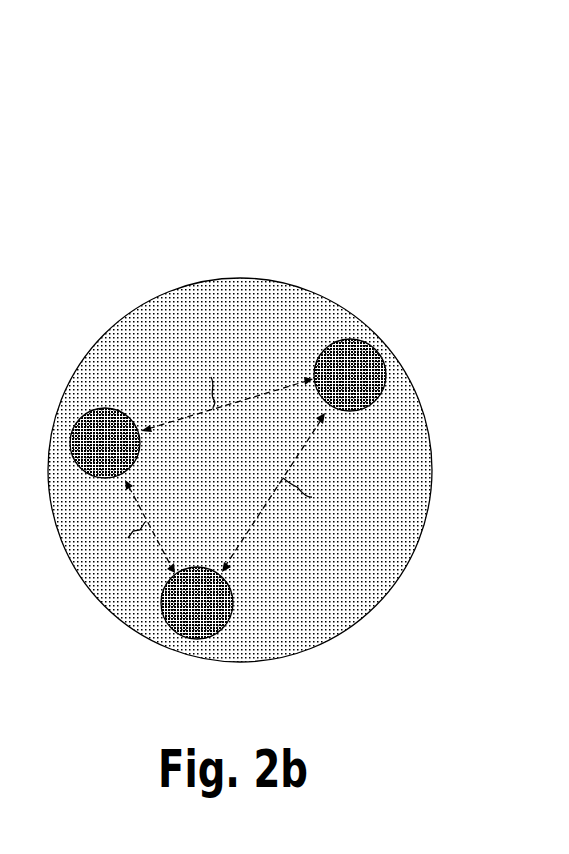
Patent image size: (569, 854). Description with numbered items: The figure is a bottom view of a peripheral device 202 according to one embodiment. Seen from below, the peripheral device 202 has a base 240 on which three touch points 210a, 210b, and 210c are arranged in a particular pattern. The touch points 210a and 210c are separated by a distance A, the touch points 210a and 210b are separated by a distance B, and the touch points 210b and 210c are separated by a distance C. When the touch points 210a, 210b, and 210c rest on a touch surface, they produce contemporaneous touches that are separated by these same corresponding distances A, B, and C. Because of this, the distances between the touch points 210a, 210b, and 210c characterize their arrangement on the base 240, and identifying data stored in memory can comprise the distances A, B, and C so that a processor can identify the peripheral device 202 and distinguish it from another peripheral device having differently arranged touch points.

The peripheral device 202 is at (488, 136).
The touch point 210a is at (105, 443).
The touch point 210b is at (197, 603).
The touch point 210c is at (350, 375).
The base 240 is at (325, 593).